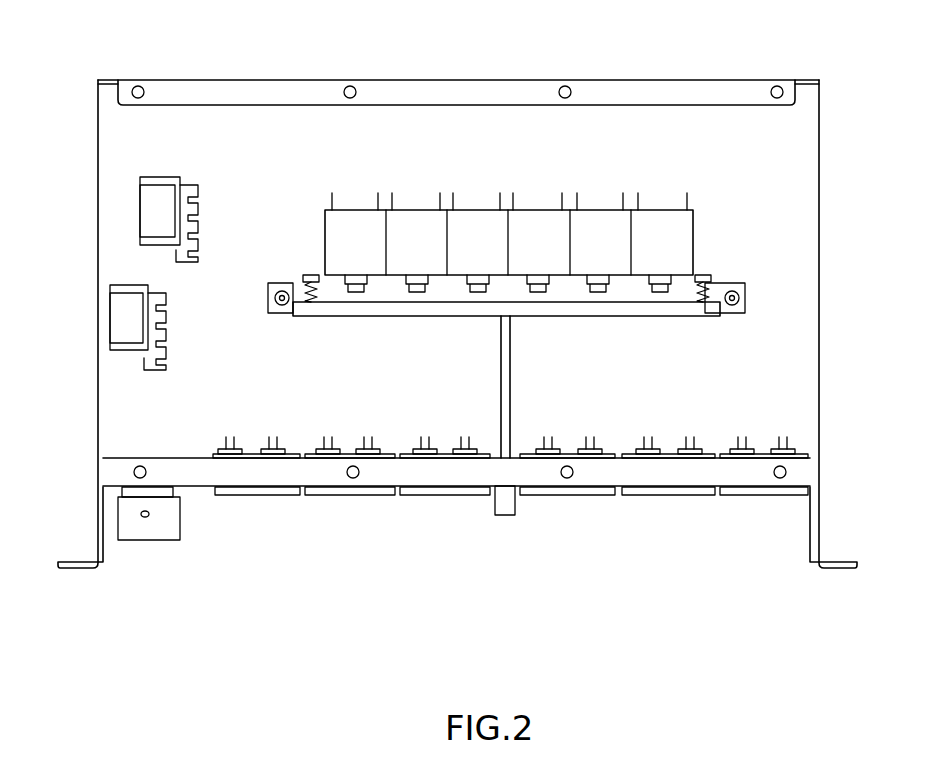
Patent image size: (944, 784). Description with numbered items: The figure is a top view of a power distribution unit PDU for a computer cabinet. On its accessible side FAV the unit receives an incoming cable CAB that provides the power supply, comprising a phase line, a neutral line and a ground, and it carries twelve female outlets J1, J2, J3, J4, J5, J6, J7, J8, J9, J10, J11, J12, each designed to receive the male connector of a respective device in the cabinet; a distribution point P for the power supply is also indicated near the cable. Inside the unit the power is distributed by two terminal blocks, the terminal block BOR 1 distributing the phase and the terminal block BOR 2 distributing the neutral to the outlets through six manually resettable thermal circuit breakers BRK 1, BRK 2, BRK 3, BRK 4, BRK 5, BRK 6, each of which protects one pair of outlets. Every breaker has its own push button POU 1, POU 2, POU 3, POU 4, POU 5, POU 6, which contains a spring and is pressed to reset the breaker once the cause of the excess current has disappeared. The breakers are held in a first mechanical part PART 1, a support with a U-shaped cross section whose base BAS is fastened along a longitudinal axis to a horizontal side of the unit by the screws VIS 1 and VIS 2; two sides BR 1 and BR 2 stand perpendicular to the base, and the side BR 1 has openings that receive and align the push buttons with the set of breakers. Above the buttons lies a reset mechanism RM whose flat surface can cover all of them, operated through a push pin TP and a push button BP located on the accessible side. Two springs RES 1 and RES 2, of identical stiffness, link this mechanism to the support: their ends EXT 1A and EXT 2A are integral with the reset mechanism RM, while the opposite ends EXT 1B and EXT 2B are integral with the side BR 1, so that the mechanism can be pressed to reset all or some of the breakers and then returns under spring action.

The spring RES 1 is at (305, 280).
The spring RES 2 is at (705, 292).
The end of spring EXT 1A is at (307, 318).
The end of spring EXT 1B is at (308, 278).
The end of spring EXT 2A is at (713, 318).
The end of spring EXT 2B is at (703, 280).
The base BAS is at (311, 278).
The push button POU 1 is at (323, 290).
The push button POU 2 is at (417, 288).
The push button POU 3 is at (479, 288).
The push button POU 4 is at (539, 288).
The push button POU 5 is at (602, 288).
The push button POU 6 is at (661, 288).
The side of support BR 1 is at (706, 283).
The side of support BR 2 is at (683, 317).
The screw VIS 1 is at (742, 298).
The screw VIS 2 is at (268, 288).
The terminal block BOR 1 is at (125, 317).
The terminal block BOR 2 is at (152, 193).
The first mechanical part PART 1 is at (266, 310).
The push pin TP is at (502, 389).
The reset mechanism RM is at (588, 312).
The push button BP is at (515, 505).
The accessible side FAV is at (466, 578).
The incoming cable CAB is at (152, 540).
The distribution point P is at (149, 514).
The power distribution unit PDU is at (515, 612).
The female outlet J1 is at (230, 438).
The female outlet J2 is at (273, 438).
The female outlet J3 is at (328, 438).
The female outlet J4 is at (368, 438).
The female outlet J5 is at (425, 438).
The female outlet J6 is at (465, 438).
The female outlet J7 is at (548, 438).
The female outlet J8 is at (590, 438).
The female outlet J9 is at (648, 438).
The female outlet J10 is at (690, 438).
The female outlet J11 is at (742, 438).
The female outlet J12 is at (783, 438).
The circuit breaker BRK 1 is at (356, 275).
The circuit breaker BRK 2 is at (417, 275).
The circuit breaker BRK 3 is at (478, 275).
The circuit breaker BRK 4 is at (539, 275).
The circuit breaker BRK 5 is at (600, 275).
The circuit breaker BRK 6 is at (662, 275).